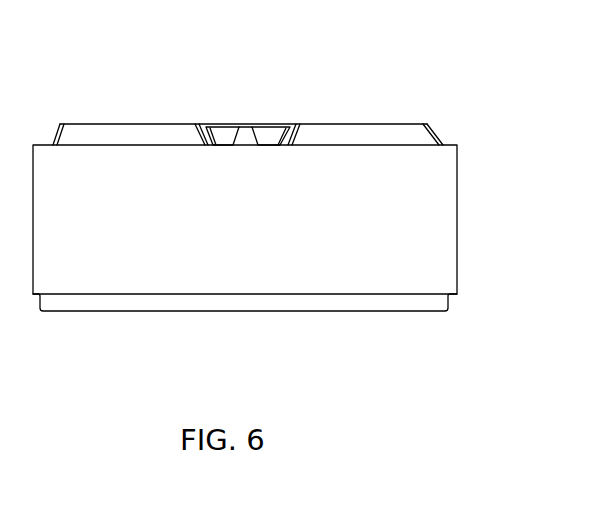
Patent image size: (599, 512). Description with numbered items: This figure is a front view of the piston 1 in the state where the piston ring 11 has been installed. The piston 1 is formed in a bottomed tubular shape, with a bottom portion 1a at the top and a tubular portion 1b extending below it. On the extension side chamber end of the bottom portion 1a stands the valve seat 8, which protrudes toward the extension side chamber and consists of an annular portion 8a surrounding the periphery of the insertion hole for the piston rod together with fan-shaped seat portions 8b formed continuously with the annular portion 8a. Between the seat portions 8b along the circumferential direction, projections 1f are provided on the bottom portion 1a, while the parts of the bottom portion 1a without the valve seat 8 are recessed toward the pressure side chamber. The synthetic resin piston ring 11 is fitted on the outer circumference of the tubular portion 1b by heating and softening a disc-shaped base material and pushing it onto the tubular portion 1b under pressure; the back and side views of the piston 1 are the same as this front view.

The piston 1 is at (452, 133).
The bottom portion 1a is at (363, 124).
The tubular portion 1b is at (450, 298).
The projection 1f is at (247, 124).
The valve seat 8 is at (266, 77).
The annular portion 8a is at (227, 124).
The seat portion 8b is at (122, 124).
The piston ring 11 is at (457, 232).